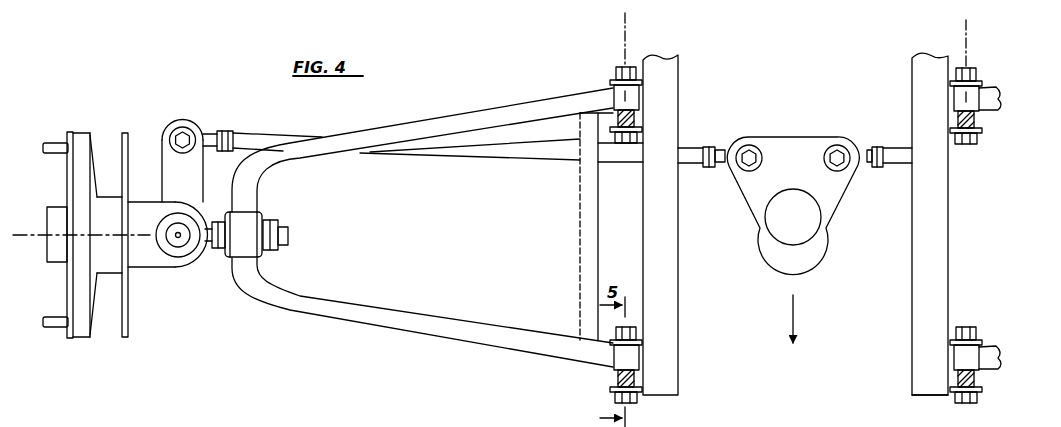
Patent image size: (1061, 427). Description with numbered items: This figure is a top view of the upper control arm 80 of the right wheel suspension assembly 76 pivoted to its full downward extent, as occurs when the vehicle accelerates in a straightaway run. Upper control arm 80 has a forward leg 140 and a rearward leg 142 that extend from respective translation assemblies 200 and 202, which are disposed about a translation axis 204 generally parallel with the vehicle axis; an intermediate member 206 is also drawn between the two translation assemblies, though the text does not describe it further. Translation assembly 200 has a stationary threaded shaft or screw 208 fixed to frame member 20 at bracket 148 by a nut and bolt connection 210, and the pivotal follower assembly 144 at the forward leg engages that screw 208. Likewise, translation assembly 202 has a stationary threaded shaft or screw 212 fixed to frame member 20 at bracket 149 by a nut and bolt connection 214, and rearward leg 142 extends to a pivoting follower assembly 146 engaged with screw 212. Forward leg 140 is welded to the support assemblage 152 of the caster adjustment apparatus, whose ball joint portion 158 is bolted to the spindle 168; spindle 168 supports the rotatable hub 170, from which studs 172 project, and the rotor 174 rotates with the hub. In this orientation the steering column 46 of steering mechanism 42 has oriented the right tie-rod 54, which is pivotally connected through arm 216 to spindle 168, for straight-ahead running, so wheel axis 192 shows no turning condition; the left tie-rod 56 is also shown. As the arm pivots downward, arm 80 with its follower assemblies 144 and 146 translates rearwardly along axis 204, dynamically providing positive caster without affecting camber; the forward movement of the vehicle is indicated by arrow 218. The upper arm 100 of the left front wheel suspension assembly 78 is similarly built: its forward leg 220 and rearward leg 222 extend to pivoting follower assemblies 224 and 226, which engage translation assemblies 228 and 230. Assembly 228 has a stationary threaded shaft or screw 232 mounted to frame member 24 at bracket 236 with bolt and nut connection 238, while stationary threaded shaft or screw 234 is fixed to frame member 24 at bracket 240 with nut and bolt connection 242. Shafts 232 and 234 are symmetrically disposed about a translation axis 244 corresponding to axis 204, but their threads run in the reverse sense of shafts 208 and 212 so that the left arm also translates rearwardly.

The frame member 20 is at (670, 312).
The frame member 24 is at (942, 230).
The steering mechanism 42 is at (758, 253).
The steering column 46 is at (823, 238).
The right tie-rod 54 is at (273, 138).
The left tie-rod 56 is at (898, 153).
The right wheel suspension assembly 76 is at (482, 32).
The left front wheel suspension assembly 78 is at (1013, 35).
The upper control arm 80 is at (385, 341).
The upper arm 100 is at (987, 75).
The forward leg 140 is at (468, 338).
The rearward leg 142 is at (458, 117).
The pivotal follower assembly 144 is at (608, 373).
The pivoting follower assembly 146 is at (609, 115).
The bracket 148 is at (643, 396).
The bracket 149 is at (638, 110).
The support assemblage 152 is at (272, 209).
The ball joint portion 158 is at (191, 269).
The spindle 168 is at (157, 258).
The hub 170 is at (84, 140).
The studs 172 is at (61, 147).
The rotor 174 is at (127, 335).
The wheel axis 192 is at (27, 235).
The translation assembly 200 is at (592, 367).
The translation assembly 202 is at (606, 76).
The translation axis 204 is at (623, 28).
The bracket 206 is at (588, 233).
The stationary threaded shaft or screw 208 is at (612, 383).
The nut and bolt connection 210 is at (614, 333).
The stationary threaded shaft or screw 212 is at (612, 114).
The nut and bolt connection 214 is at (628, 142).
The arm 216 is at (170, 177).
The arrow 218 is at (795, 309).
The forward leg 220 is at (987, 360).
The rearward leg 222 is at (977, 120).
The pivoting follower assembly 224 is at (972, 352).
The pivoting follower assembly 226 is at (977, 95).
The translation assembly 228 is at (980, 405).
The translation assembly 230 is at (987, 142).
The stationary threaded shaft or screw 232 is at (977, 382).
The stationary threaded shaft or screw 234 is at (983, 131).
The bracket 236 is at (952, 393).
The bolt and nut connection 238 is at (967, 327).
The bracket 240 is at (952, 143).
The nut and bolt connection 242 is at (963, 67).
The translation axis 244 is at (963, 26).